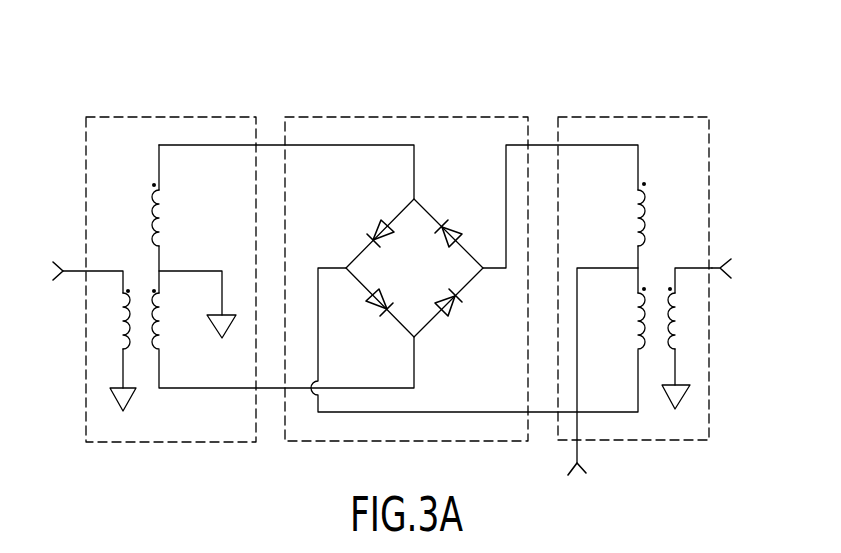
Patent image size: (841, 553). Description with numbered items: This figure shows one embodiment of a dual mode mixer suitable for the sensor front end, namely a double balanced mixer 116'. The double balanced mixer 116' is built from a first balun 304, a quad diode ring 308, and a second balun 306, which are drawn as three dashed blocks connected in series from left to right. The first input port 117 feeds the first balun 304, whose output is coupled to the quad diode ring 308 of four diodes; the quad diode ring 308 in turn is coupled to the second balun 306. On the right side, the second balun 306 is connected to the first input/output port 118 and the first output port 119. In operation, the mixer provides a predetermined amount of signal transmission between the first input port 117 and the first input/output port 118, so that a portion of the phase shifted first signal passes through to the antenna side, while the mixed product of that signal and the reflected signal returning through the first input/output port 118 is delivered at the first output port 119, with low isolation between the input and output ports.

The double balanced mixer 116' is at (401, 253).
The first balun 304 is at (137, 122).
The quad diode ring 308 is at (330, 122).
The second balun 306 is at (585, 122).
The first input port 117 is at (57, 262).
The first input/output port 118 is at (729, 259).
The first output port 119 is at (585, 470).